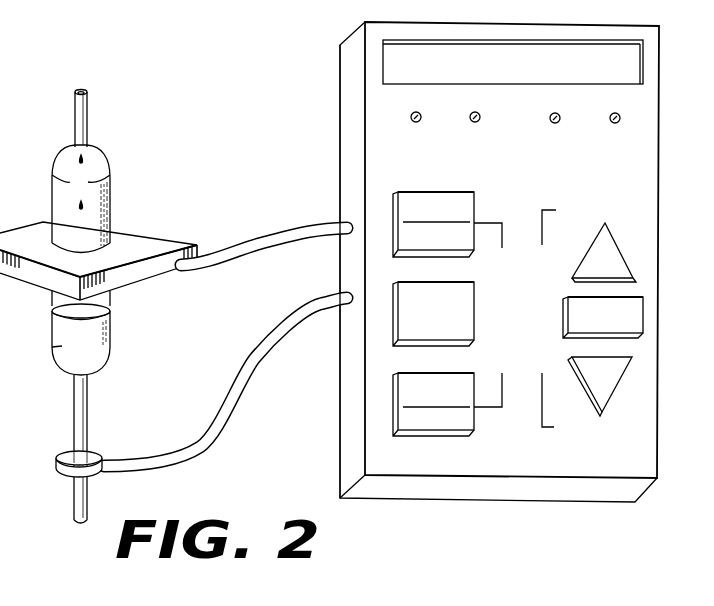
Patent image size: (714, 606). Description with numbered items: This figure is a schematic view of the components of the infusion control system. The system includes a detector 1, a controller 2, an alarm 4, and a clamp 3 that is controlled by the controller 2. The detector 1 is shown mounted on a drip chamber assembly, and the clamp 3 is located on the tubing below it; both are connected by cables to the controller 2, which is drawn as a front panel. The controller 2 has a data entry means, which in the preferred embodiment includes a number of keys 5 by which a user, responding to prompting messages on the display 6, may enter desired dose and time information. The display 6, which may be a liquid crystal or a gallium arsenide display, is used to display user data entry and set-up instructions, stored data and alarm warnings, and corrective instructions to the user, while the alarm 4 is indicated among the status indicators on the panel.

The detector 1 is at (140, 237).
The controller 2 is at (499, 262).
The clamp 3 is at (94, 458).
The alarm 4 is at (480, 117).
The keys 5 is at (608, 266).
The display 6 is at (518, 70).